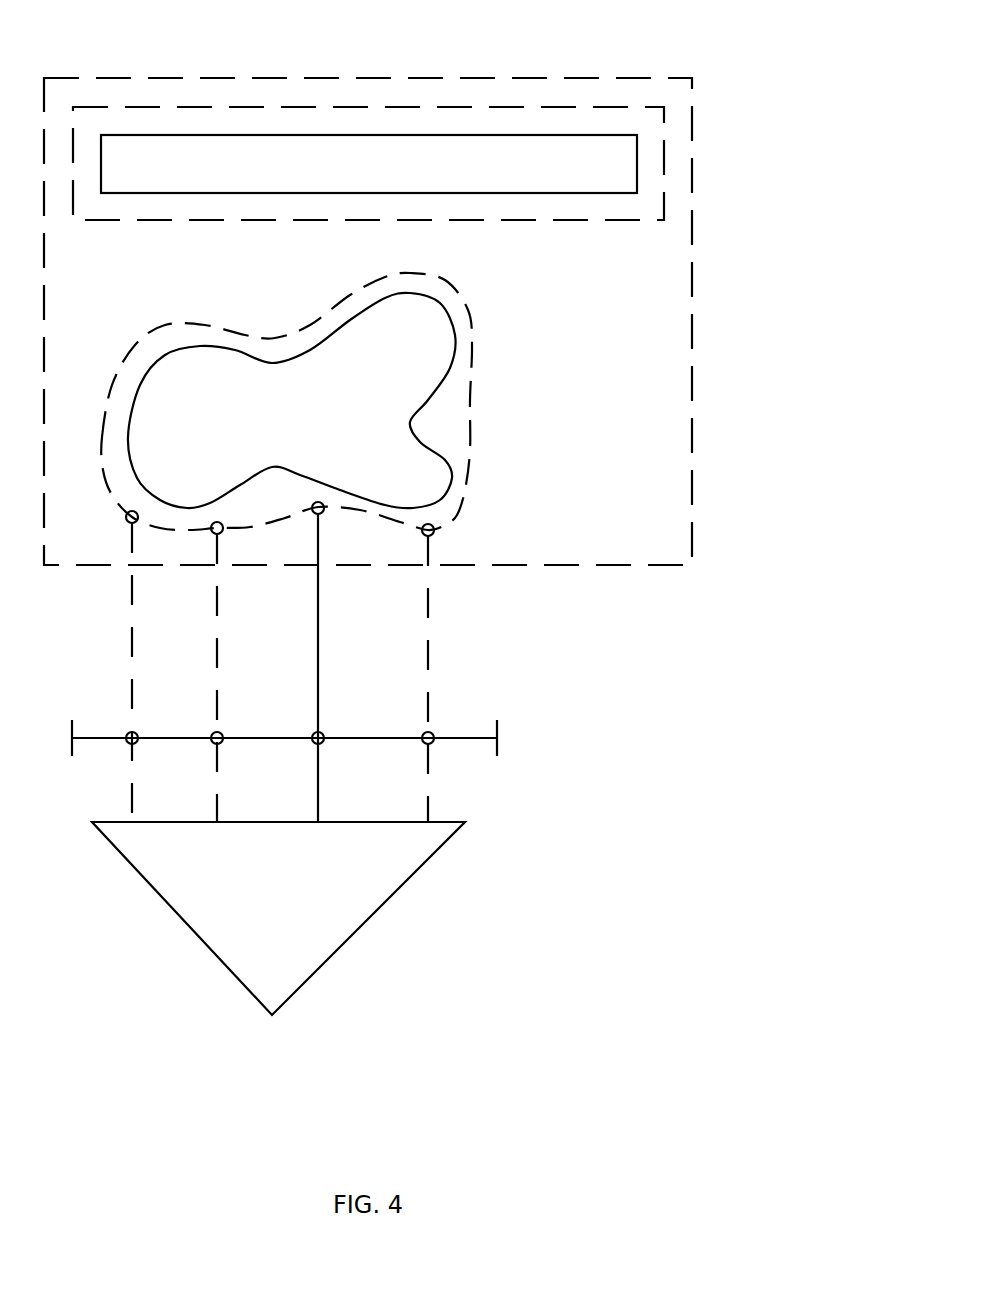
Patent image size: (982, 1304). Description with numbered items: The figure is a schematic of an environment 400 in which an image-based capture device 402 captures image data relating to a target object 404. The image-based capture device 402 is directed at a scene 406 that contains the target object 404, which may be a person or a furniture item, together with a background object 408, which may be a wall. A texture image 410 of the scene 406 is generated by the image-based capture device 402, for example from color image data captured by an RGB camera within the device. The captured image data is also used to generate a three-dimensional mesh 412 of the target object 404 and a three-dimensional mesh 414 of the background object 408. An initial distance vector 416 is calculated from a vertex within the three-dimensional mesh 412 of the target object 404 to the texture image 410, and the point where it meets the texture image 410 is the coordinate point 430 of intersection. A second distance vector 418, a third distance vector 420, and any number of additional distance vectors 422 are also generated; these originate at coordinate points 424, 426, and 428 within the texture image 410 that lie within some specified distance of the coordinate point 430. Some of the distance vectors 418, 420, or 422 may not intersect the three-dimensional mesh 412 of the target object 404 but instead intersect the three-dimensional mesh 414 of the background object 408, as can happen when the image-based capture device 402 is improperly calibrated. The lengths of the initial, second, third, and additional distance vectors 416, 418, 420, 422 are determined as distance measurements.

The environment 400 is at (347, 1164).
The image-based capture device 402 is at (383, 902).
The target object 404 is at (474, 348).
The scene 406 is at (553, 78).
The background object 408 is at (637, 167).
The texture image 410 is at (464, 735).
The 3D mesh of the target object 412 is at (466, 428).
The 3D mesh of the background object 414 is at (592, 220).
The initial distance vector 416 is at (318, 612).
The second distance vector 418 is at (428, 660).
The third distance vector 420 is at (217, 660).
The additional distance vectors 422 is at (132, 630).
The coordinate point 424 is at (428, 745).
The coordinate point 426 is at (217, 745).
The coordinate point 428 is at (132, 745).
The coordinate point of intersection 430 is at (318, 745).